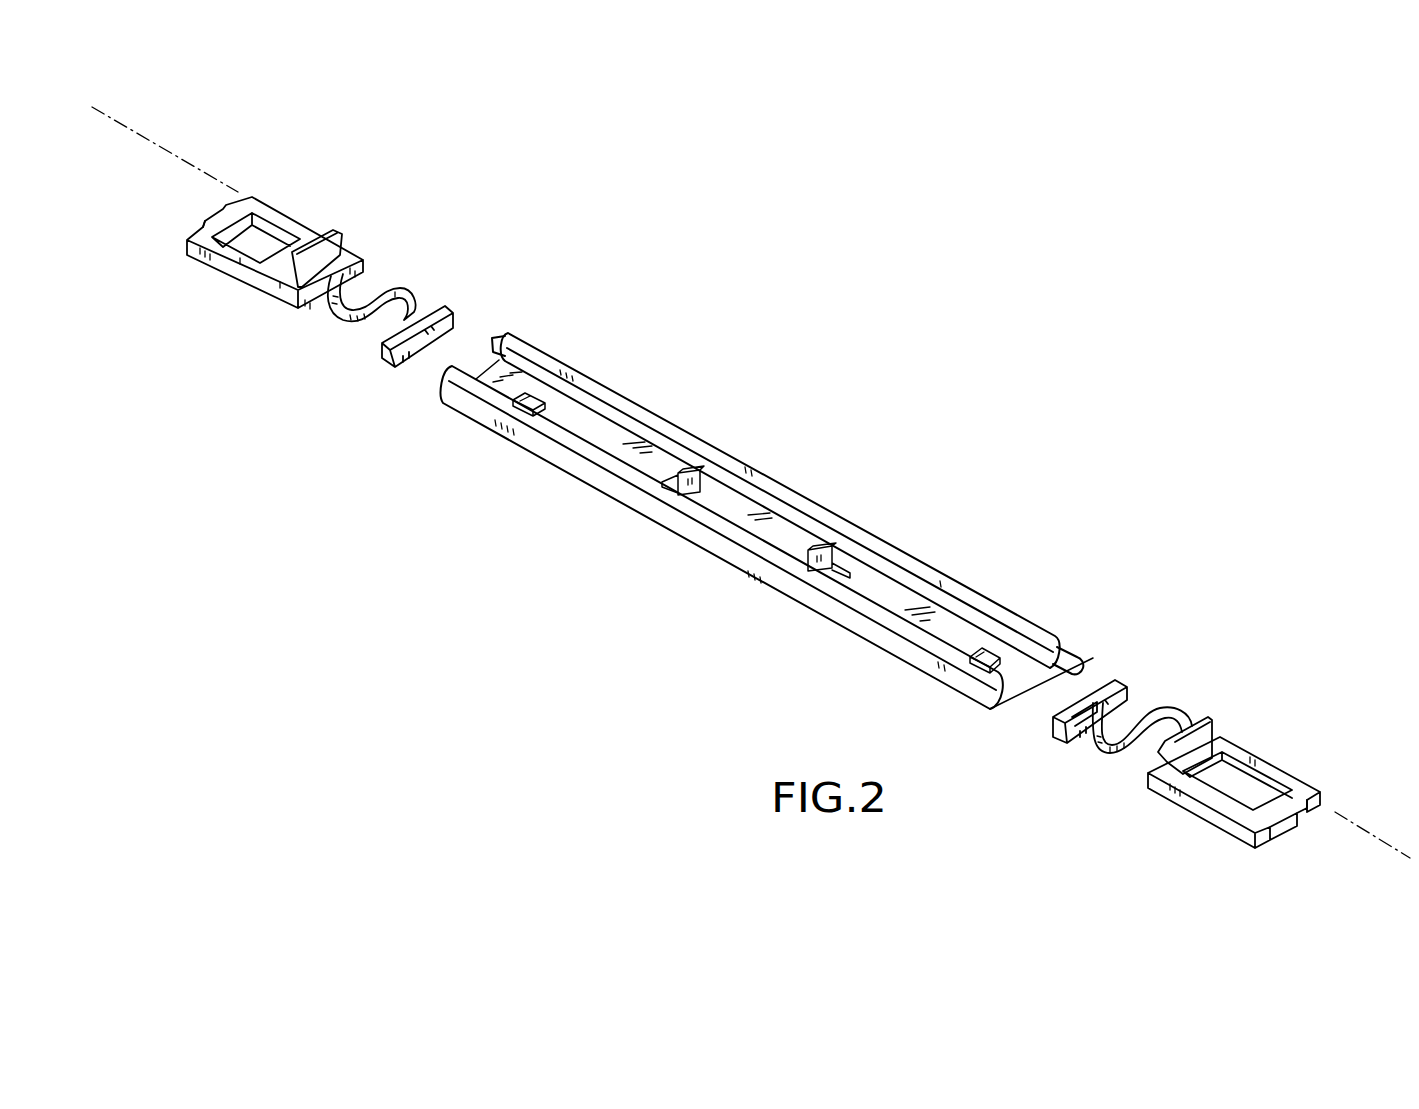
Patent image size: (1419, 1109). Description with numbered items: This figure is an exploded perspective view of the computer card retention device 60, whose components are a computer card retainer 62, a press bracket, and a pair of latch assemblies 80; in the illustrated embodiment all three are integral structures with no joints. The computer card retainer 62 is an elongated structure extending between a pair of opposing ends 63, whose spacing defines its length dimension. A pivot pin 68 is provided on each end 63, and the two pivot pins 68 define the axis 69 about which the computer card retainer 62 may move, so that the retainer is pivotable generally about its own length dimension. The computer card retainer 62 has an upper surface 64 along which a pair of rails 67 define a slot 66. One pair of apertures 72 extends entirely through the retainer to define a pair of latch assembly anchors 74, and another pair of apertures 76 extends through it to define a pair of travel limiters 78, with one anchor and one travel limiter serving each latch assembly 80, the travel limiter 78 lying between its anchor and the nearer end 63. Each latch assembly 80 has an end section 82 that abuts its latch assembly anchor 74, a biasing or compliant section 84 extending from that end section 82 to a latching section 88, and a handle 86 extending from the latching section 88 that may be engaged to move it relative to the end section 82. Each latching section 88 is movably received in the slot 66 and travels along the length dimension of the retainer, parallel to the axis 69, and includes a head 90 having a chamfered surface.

The computer card retention device 60 is at (781, 531).
The computer card retainer 62 is at (595, 378).
The end 63 is at (447, 373).
The upper surface 64 is at (895, 592).
The slot 66 is at (1009, 668).
The rail 67 is at (698, 447).
The pivot pin 68 is at (497, 335).
The axis 69 is at (203, 170).
The aperture 72 is at (673, 470).
The latch assembly anchor 74 is at (703, 486).
The aperture 76 is at (545, 414).
The travel limiter 78 is at (532, 397).
The latch assembly 80 is at (750, 515).
The end section 82 is at (450, 304).
The compliant section 84 is at (347, 330).
The handle 86 is at (337, 247).
The latching section 88 is at (242, 275).
The head 90 is at (202, 208).